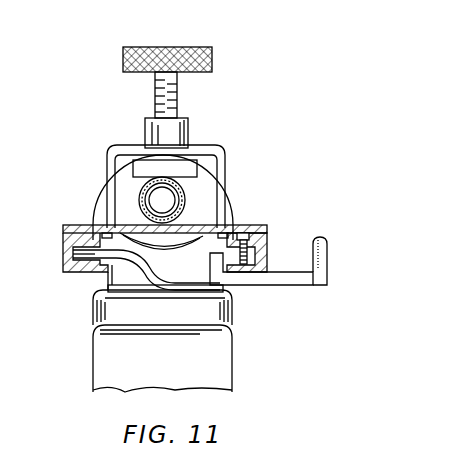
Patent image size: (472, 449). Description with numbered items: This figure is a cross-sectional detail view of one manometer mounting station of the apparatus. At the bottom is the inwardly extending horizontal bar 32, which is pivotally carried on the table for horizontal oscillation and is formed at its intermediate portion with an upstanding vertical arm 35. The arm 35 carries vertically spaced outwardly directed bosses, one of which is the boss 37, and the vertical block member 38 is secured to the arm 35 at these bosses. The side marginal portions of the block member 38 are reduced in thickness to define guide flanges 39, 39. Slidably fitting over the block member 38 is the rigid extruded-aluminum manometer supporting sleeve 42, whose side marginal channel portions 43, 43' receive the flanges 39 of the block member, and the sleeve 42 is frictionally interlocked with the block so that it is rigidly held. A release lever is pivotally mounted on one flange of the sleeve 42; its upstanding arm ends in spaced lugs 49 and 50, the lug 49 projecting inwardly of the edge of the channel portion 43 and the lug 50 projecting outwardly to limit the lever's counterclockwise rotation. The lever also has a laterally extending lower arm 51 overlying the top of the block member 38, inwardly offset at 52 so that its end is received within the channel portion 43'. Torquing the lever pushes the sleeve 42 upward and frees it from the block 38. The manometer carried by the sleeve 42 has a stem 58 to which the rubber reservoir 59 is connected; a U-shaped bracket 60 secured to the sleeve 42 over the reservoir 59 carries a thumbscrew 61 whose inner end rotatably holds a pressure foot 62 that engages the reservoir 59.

The horizontal bar 32 is at (213, 370).
The vertical arm 35 is at (195, 318).
The boss 37 is at (147, 296).
The vertical block member 38 is at (118, 278).
The guide flange 39 is at (72, 228).
The manometer supporting sleeve 42 is at (128, 226).
The side marginal channel portion 43 is at (258, 234).
The side marginal channel portion 43' is at (61, 252).
The lug 49 is at (237, 230).
The lug 50 is at (326, 251).
The lower arm 51 is at (178, 279).
The inward offset 52 is at (143, 263).
The stem 58 is at (151, 200).
The rubber reservoir 59 is at (180, 207).
The U-shaped bracket 60 is at (220, 150).
The thumbscrew 61 is at (208, 60).
The pressure foot 62 is at (184, 165).